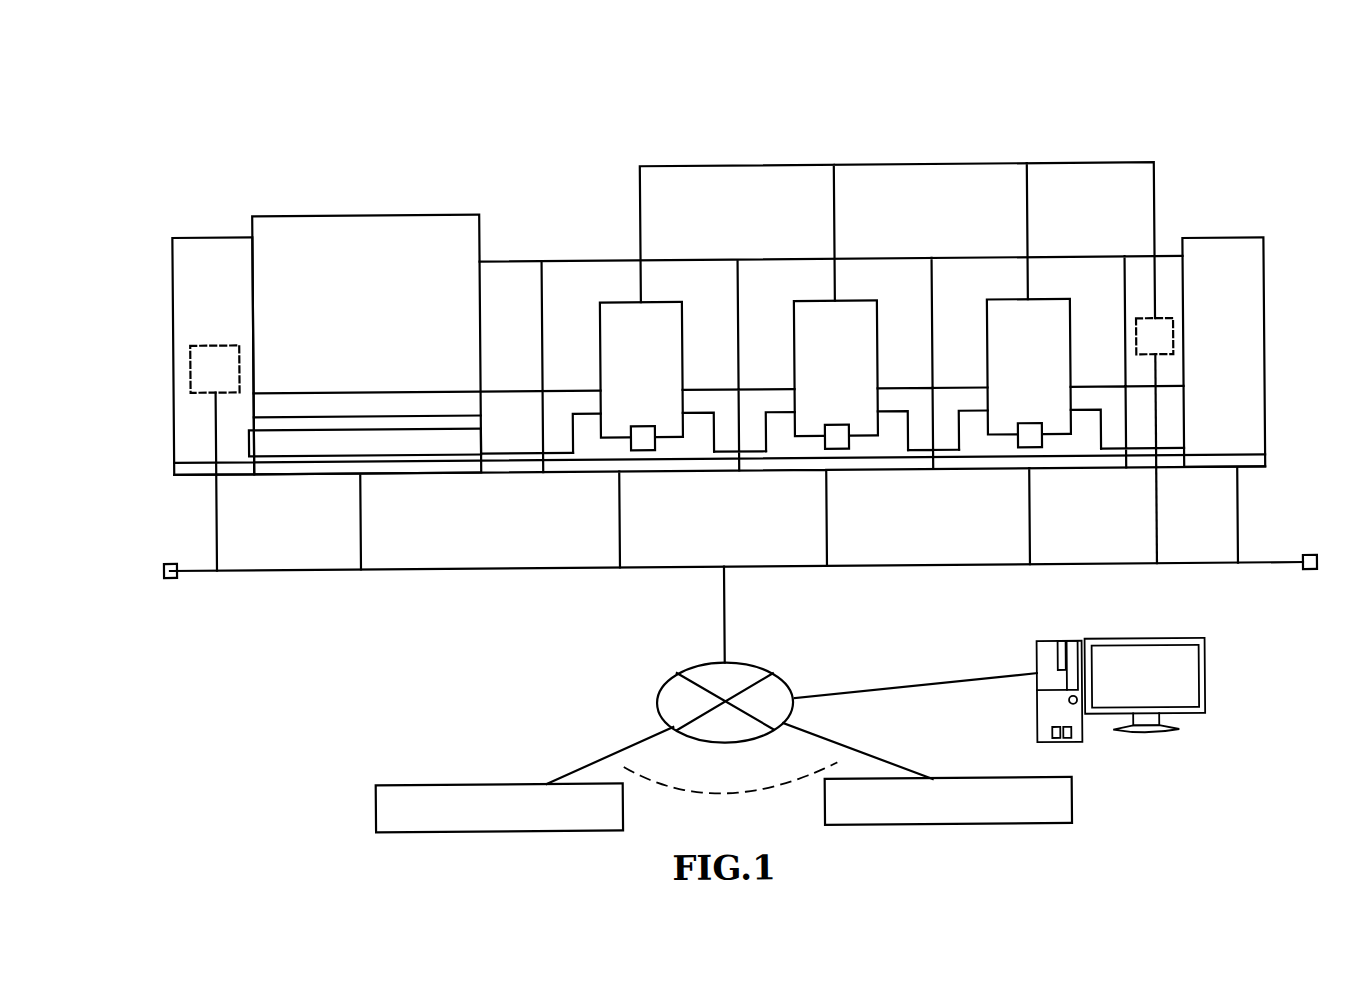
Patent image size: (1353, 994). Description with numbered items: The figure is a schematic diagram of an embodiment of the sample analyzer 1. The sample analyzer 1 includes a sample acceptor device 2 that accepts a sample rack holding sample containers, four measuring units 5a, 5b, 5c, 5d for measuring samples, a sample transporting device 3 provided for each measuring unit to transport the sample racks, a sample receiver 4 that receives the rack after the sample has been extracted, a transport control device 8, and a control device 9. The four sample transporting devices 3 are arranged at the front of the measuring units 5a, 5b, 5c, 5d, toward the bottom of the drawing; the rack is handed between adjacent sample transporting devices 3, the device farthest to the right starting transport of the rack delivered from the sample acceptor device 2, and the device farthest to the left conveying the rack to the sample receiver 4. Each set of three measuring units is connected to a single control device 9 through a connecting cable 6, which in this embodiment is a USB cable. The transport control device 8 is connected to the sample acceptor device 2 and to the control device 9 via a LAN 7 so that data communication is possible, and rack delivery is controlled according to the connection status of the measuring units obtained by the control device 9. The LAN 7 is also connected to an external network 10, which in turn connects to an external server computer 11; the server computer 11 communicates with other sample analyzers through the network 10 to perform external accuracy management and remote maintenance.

The sample analyzer 1 is at (1089, 98).
The sample acceptor device 2 is at (1225, 255).
The sample transporting device 3 is at (332, 471).
The sample receiver 4 is at (213, 247).
The measuring unit 5a is at (685, 279).
The measuring unit 5b is at (890, 279).
The measuring unit 5c is at (1085, 275).
The measuring unit 5d is at (440, 222).
The connecting cable 6 is at (806, 167).
The LAN 7 is at (454, 573).
The transport control device 8 is at (192, 369).
The control device 9 is at (1178, 344).
The network 10 is at (656, 704).
The server computer 11 is at (1206, 711).